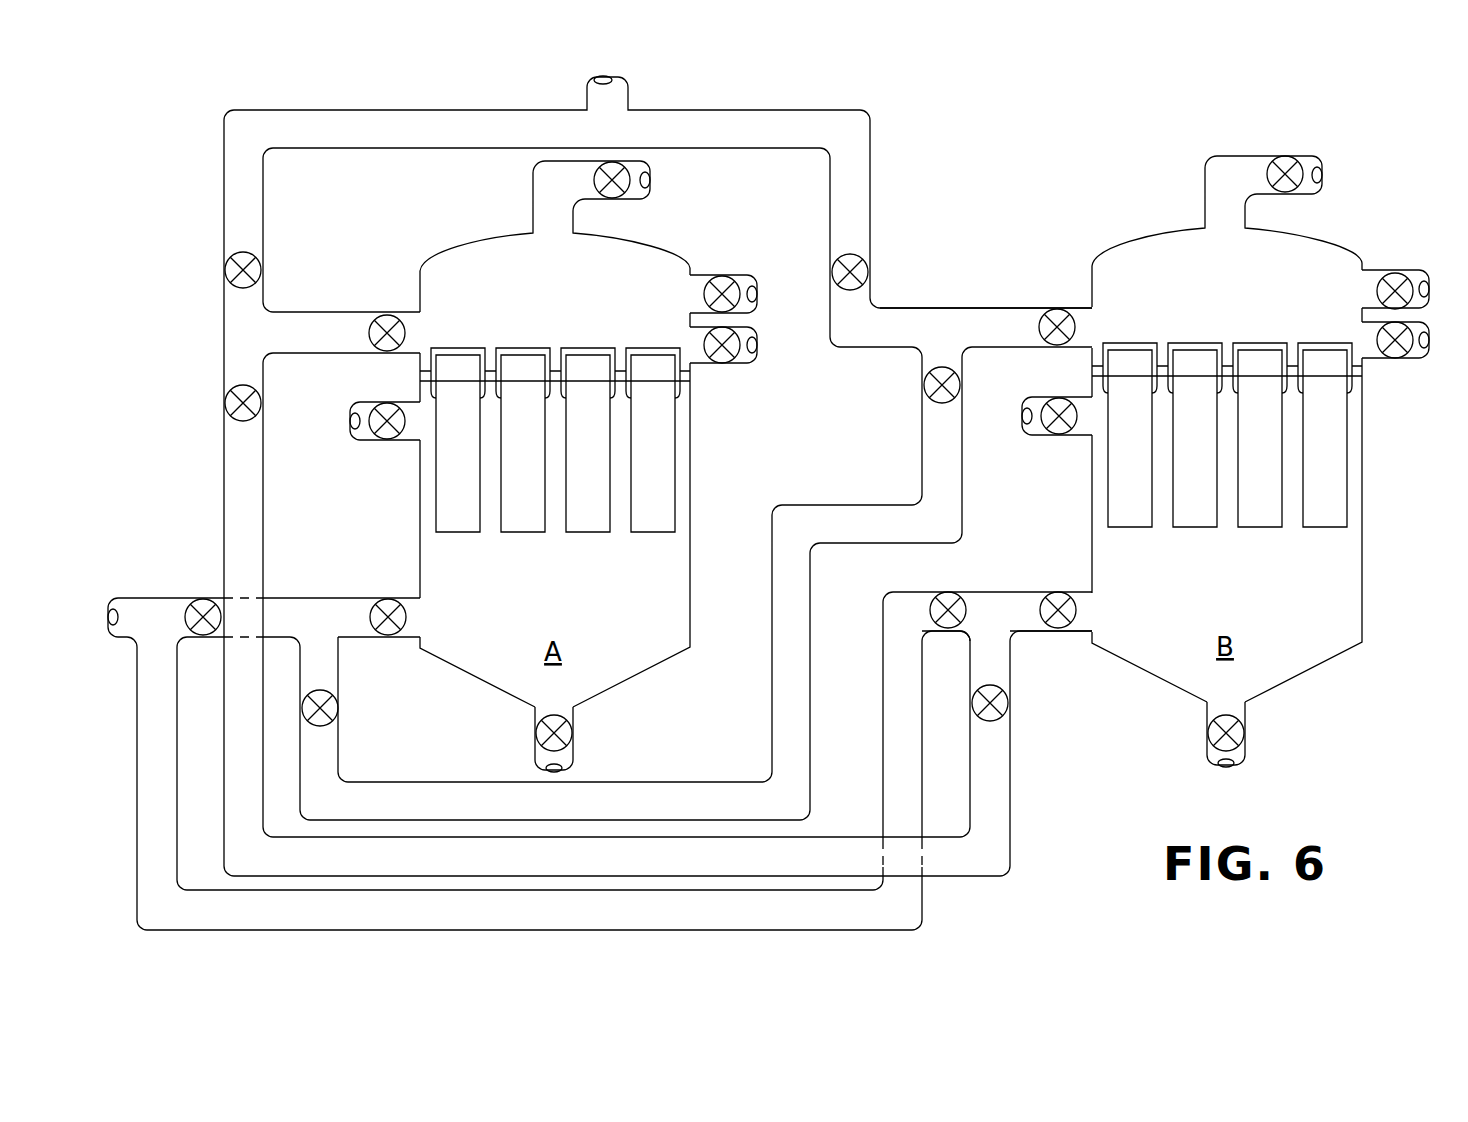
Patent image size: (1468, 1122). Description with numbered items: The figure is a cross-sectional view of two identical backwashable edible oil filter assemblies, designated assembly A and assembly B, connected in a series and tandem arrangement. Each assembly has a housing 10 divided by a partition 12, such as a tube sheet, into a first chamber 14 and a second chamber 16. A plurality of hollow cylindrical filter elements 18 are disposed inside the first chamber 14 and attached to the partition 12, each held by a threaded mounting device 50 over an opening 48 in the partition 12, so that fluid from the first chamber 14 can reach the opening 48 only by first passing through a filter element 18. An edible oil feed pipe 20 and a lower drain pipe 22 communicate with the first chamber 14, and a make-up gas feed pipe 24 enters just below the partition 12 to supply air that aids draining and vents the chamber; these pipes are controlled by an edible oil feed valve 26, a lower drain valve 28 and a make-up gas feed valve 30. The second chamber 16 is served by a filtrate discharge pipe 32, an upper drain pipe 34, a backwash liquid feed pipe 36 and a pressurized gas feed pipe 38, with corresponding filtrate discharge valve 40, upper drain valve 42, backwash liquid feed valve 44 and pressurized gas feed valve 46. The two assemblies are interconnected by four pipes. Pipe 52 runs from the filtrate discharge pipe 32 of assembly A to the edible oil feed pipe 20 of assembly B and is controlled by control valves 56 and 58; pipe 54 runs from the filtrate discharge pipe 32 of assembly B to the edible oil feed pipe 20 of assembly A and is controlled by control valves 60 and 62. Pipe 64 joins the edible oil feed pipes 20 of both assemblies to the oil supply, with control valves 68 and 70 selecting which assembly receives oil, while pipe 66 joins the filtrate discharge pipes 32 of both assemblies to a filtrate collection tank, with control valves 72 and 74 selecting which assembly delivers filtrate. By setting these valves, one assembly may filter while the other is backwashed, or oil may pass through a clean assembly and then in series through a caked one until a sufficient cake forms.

The housing 10 is at (372, 234).
The partition 12 is at (688, 383).
The first chamber 14 is at (690, 590).
The second chamber 16 is at (457, 245).
The filter elements 18 is at (458, 532).
The edible oil feed pipe 20 is at (357, 637).
The lower drain pipe 22 is at (573, 758).
The make-up gas feed pipe 24 is at (390, 440).
The edible oil feed valve 26 is at (388, 598).
The lower drain valve 28 is at (535, 730).
The make-up gas feed valve 30 is at (375, 402).
The filtrate discharge pipe 32 is at (323, 312).
The upper drain pipe 34 is at (757, 363).
The backwash liquid feed pipe 36 is at (547, 168).
The pressurized gas feed pipe 38 is at (752, 275).
The filtrate discharge valve 40 is at (387, 352).
The upper drain valve 42 is at (728, 365).
The backwash liquid feed valve 44 is at (610, 198).
The pressurized gas feed valve 46 is at (713, 275).
The opening 48 is at (891, 397).
The threaded mounting device 50 is at (444, 348).
The pipe 52 is at (263, 470).
The pipe 54 is at (385, 782).
The control valve 56 is at (262, 400).
The control valve 58 is at (1010, 700).
The control valve 60 is at (338, 706).
The control valve 62 is at (922, 380).
The pipe 64 is at (177, 812).
The pipe 66 is at (520, 108).
The control valve 68 is at (203, 598).
The control valve 70 is at (950, 592).
The control valve 72 is at (262, 264).
The control valve 74 is at (862, 258).